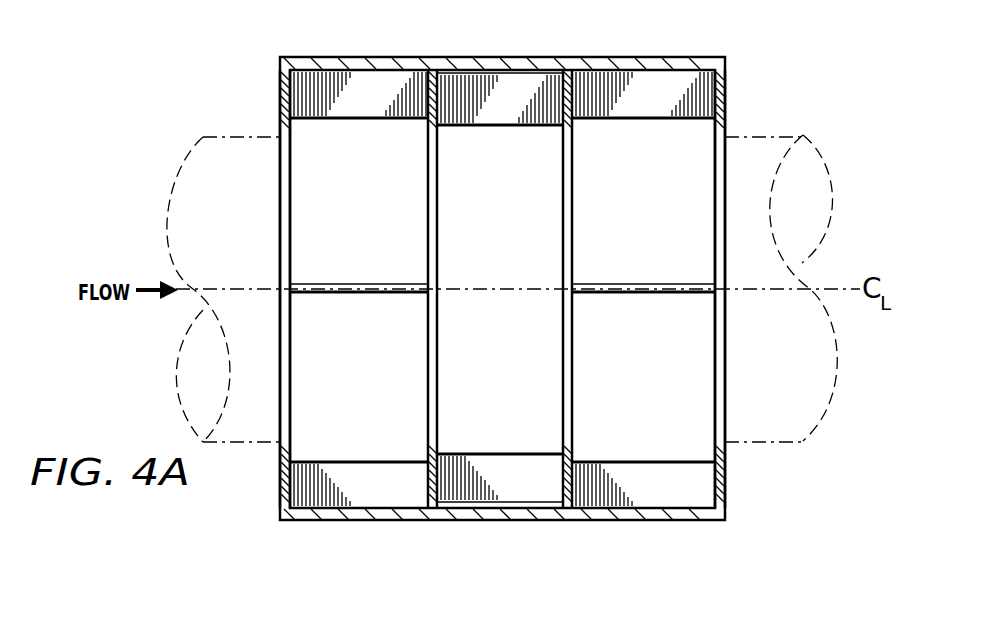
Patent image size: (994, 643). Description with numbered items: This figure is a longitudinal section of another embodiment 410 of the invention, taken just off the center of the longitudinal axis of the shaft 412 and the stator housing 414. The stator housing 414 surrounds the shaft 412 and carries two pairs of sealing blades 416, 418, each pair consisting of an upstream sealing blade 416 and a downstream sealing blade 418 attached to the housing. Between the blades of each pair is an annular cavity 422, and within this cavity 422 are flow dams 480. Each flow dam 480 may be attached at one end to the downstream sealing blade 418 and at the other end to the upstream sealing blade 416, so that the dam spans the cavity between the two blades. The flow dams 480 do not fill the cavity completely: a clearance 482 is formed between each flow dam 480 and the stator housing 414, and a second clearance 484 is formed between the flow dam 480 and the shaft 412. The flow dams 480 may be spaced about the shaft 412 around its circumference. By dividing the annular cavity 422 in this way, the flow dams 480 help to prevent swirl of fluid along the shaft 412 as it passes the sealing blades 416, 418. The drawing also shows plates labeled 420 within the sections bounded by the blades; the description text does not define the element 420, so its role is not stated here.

The embodiment 410 is at (311, 42).
The shaft 412 is at (205, 136).
The stator housing 414 is at (660, 56).
The upstream sealing blade 416 is at (283, 98).
The downstream sealing blade 418 is at (434, 95).
The flow plates 420 is at (373, 108).
The annular cavity 422 is at (456, 74).
The flow dam 480 is at (544, 83).
The clearance 482 is at (508, 76).
The second clearance 484 is at (476, 444).